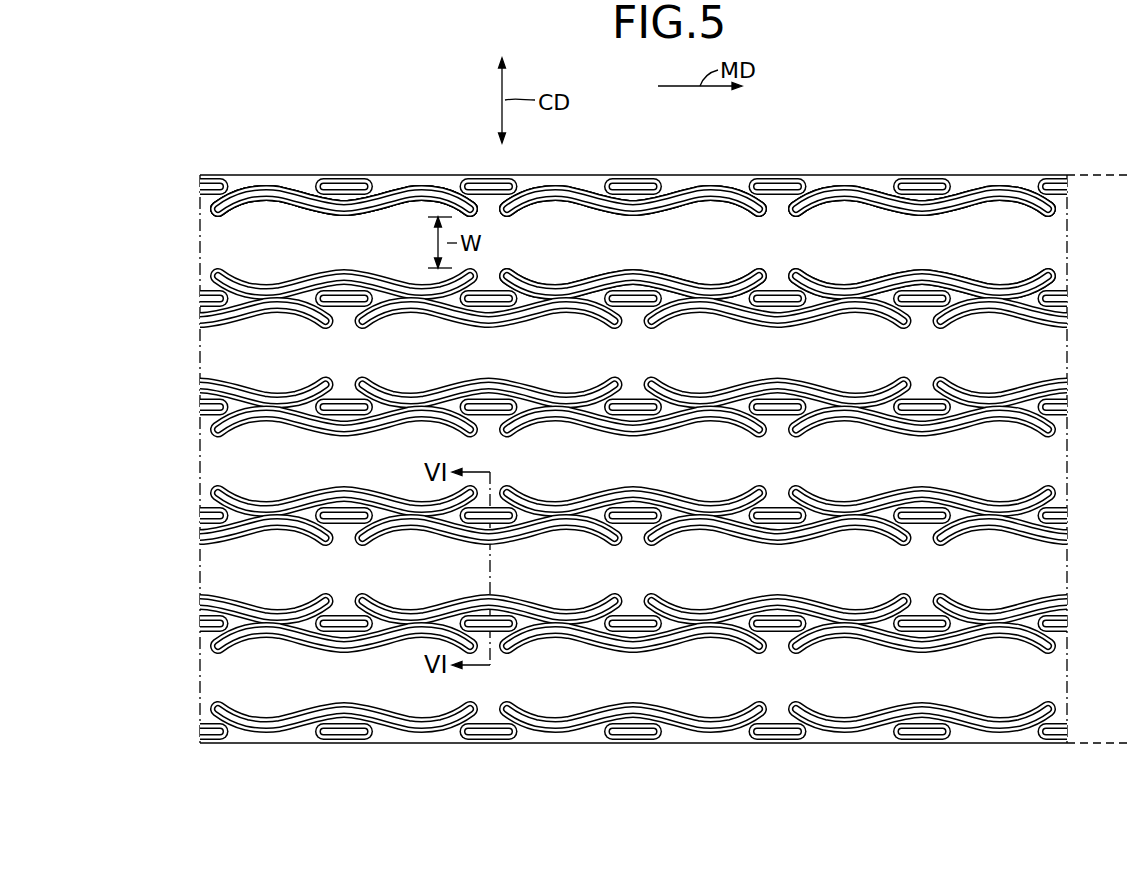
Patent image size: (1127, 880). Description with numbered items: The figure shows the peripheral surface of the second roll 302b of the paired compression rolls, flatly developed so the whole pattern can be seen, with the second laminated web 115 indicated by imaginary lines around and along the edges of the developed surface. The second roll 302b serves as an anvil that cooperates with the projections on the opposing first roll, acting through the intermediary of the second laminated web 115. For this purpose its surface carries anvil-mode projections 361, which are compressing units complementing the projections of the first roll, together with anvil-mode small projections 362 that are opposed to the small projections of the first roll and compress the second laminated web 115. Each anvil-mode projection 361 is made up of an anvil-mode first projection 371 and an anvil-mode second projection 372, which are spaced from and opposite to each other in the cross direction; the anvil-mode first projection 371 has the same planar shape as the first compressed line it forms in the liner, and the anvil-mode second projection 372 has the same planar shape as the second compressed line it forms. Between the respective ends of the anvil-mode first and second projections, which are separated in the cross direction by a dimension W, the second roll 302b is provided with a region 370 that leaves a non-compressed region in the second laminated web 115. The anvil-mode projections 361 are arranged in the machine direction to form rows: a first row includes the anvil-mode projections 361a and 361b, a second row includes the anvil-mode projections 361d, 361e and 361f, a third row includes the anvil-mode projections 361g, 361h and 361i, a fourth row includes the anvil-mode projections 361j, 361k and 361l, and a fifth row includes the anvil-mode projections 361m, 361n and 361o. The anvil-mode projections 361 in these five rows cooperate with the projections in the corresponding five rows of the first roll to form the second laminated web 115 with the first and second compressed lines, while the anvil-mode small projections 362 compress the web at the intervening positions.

The second laminated web 115 is at (1085, 164).
The second roll 302b is at (918, 156).
The anvil-mode projections 361 is at (246, 184).
The anvil-mode projection 361a is at (417, 191).
The anvil-mode projection 361b is at (601, 213).
The anvil-mode projection 361d is at (240, 320).
The anvil-mode projection 361e is at (488, 320).
The anvil-mode projection 361f is at (780, 320).
The anvil-mode projection 361g is at (240, 428).
The anvil-mode projection 361h is at (635, 428).
The anvil-mode projection 361i is at (925, 428).
The anvil-mode projection 361j is at (240, 537).
The anvil-mode projection 361k is at (488, 537).
The anvil-mode projection 361l is at (780, 537).
The anvil-mode projection 361m is at (240, 645).
The anvil-mode projection 361n is at (635, 645).
The anvil-mode projection 361o is at (925, 645).
The anvil-mode small projections 362 is at (341, 177).
The region 370 is at (472, 222).
The anvil-mode first projection 371 is at (265, 196).
The anvil-mode second projection 372 is at (305, 277).